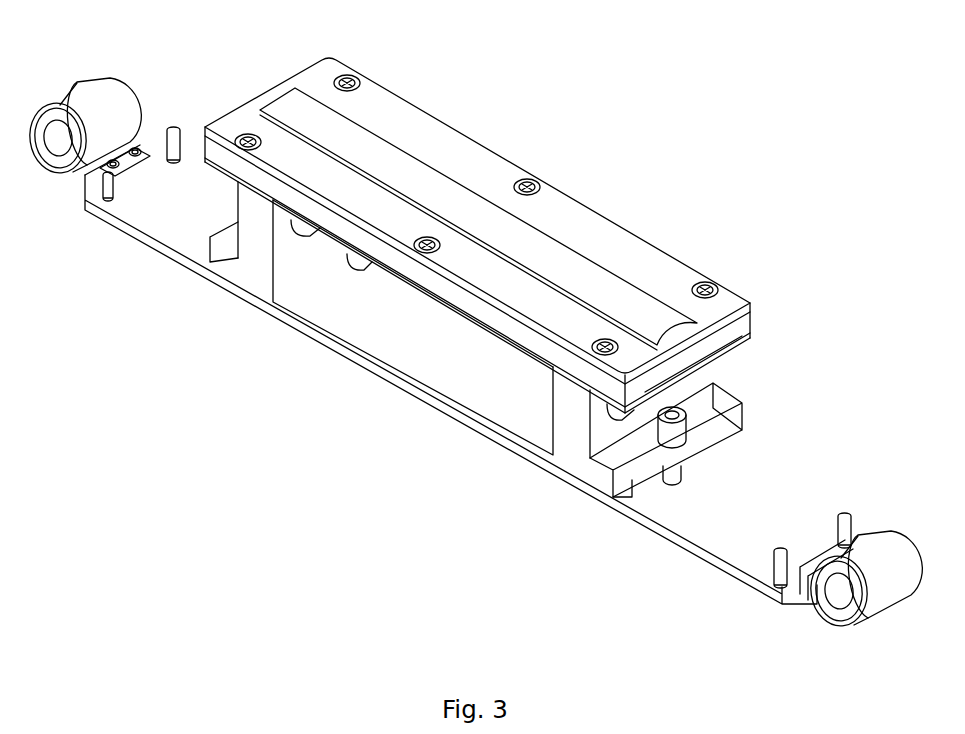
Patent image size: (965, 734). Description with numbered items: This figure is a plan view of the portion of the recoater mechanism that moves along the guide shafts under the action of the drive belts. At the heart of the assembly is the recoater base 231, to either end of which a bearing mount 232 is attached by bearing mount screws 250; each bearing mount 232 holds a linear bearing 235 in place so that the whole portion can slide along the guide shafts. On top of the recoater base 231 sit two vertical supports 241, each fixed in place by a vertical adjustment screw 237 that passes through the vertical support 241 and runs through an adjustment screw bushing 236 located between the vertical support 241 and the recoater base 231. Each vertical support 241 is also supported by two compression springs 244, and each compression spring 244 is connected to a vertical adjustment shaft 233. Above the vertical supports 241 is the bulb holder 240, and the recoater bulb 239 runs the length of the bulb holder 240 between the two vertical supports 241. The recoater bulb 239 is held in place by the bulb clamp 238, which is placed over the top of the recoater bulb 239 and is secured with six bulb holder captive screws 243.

The recoater base 231 is at (472, 403).
The bearing mount 232 is at (80, 97).
The vertical adjustment shaft 233 is at (358, 257).
The linear bearing 235 is at (780, 565).
The adjustment screw bushing 236 is at (664, 481).
The vertical adjustment screw 237 is at (664, 420).
The bulb clamp 238 is at (310, 77).
The recoater bulb 239 is at (398, 161).
The bulb holder 240 is at (247, 178).
The vertical support 241 is at (248, 258).
The bulb holder captive screw 243 is at (348, 80).
The compression spring 244 is at (357, 262).
The bearing mount screw 250 is at (143, 148).